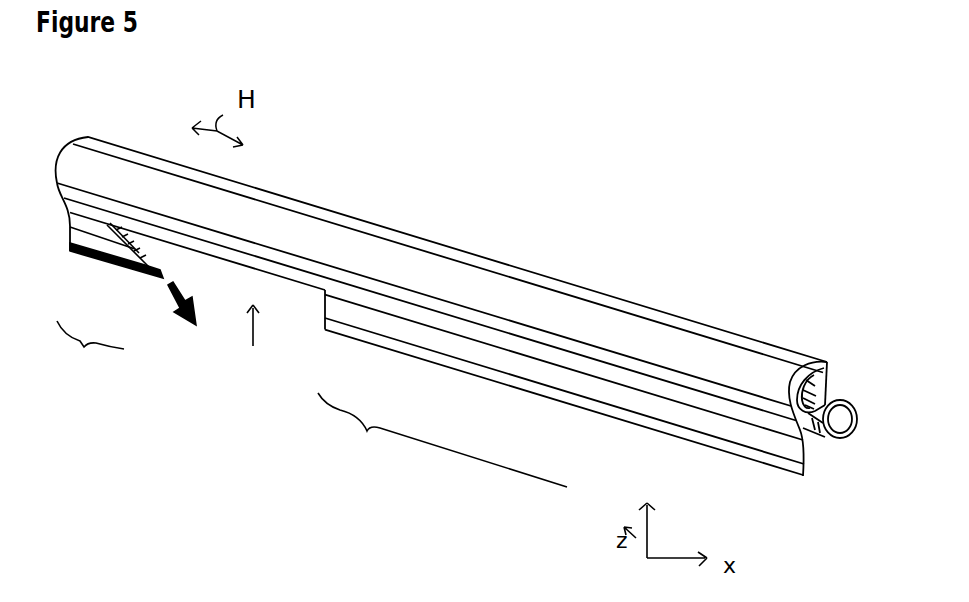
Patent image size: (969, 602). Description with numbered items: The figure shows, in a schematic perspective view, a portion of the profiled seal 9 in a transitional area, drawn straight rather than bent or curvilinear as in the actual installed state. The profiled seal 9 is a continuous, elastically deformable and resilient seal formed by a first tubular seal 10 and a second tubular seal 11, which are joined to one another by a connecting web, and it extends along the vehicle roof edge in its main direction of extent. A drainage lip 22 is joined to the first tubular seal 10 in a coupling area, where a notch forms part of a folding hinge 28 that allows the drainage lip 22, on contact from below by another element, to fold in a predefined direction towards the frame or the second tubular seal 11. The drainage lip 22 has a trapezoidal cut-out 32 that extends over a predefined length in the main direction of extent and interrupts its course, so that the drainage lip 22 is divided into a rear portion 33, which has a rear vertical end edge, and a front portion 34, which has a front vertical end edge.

The profiled seal 9 is at (623, 155).
The first tubular seal 10 is at (620, 327).
The second tubular seal 11 is at (845, 397).
The drainage lip 22 is at (78, 230).
The folding hinge 28 is at (152, 281).
The cut-out 32 is at (252, 344).
The rear portion 33 is at (90, 355).
The front portion 34 is at (442, 440).